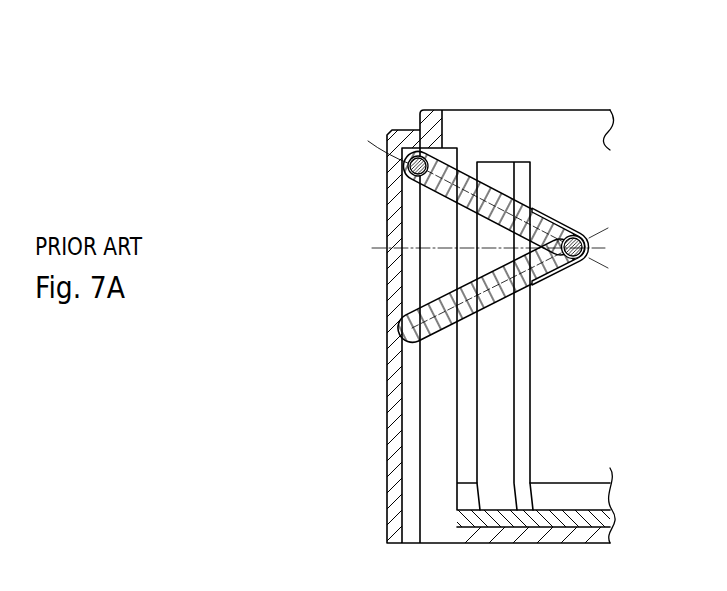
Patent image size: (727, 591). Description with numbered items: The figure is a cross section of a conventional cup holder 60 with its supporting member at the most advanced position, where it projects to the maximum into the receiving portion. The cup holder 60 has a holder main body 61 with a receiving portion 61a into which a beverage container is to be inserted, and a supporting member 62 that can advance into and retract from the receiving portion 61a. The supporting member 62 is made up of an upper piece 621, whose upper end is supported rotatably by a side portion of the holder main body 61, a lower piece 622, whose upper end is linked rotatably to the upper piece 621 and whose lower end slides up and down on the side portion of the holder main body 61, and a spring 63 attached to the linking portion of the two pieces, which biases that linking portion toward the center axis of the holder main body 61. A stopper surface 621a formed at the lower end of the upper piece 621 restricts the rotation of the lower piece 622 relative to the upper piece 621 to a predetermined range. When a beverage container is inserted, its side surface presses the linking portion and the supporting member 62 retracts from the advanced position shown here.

The cup holder 60 is at (414, 79).
The holder main body 61 is at (612, 124).
The receiving portion 61a is at (598, 434).
The supporting member 62 is at (327, 205).
The upper piece 621 is at (476, 201).
The stopper surface 621a is at (524, 287).
The lower piece 622 is at (458, 281).
The spring 63 is at (400, 250).